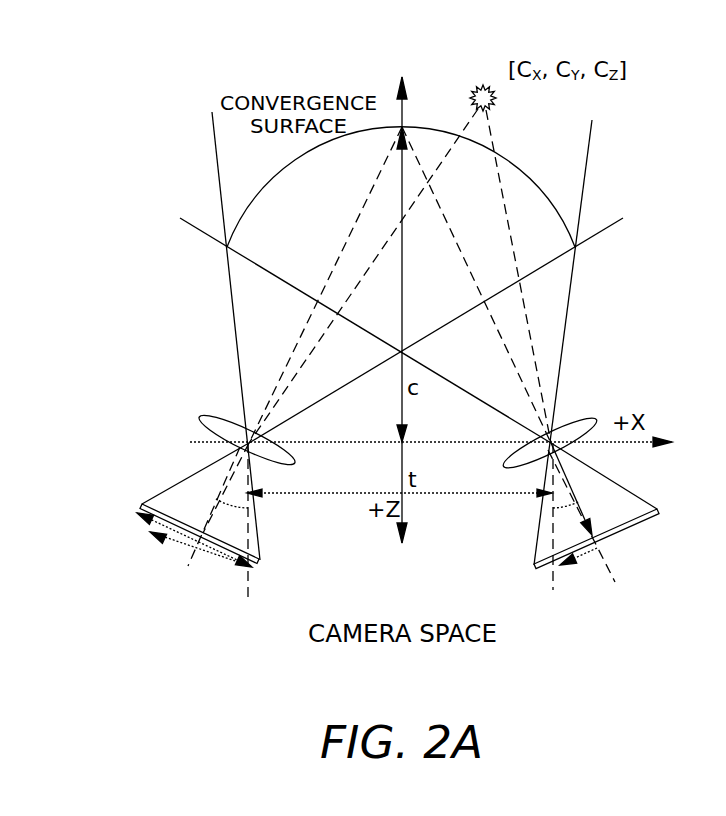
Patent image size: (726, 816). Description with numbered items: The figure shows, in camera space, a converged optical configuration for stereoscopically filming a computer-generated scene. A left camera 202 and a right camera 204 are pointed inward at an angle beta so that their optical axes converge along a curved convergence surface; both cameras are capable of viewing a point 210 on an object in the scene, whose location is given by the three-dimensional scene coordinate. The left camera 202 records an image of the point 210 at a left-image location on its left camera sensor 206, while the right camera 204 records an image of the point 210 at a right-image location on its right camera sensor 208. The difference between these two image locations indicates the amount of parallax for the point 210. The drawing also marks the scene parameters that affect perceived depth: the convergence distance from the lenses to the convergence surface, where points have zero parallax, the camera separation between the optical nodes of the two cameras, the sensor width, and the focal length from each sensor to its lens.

The left camera 202 is at (221, 369).
The right camera 204 is at (603, 369).
The left camera sensor 206 is at (142, 504).
The right camera sensor 208 is at (657, 508).
The point 210 is at (481, 86).